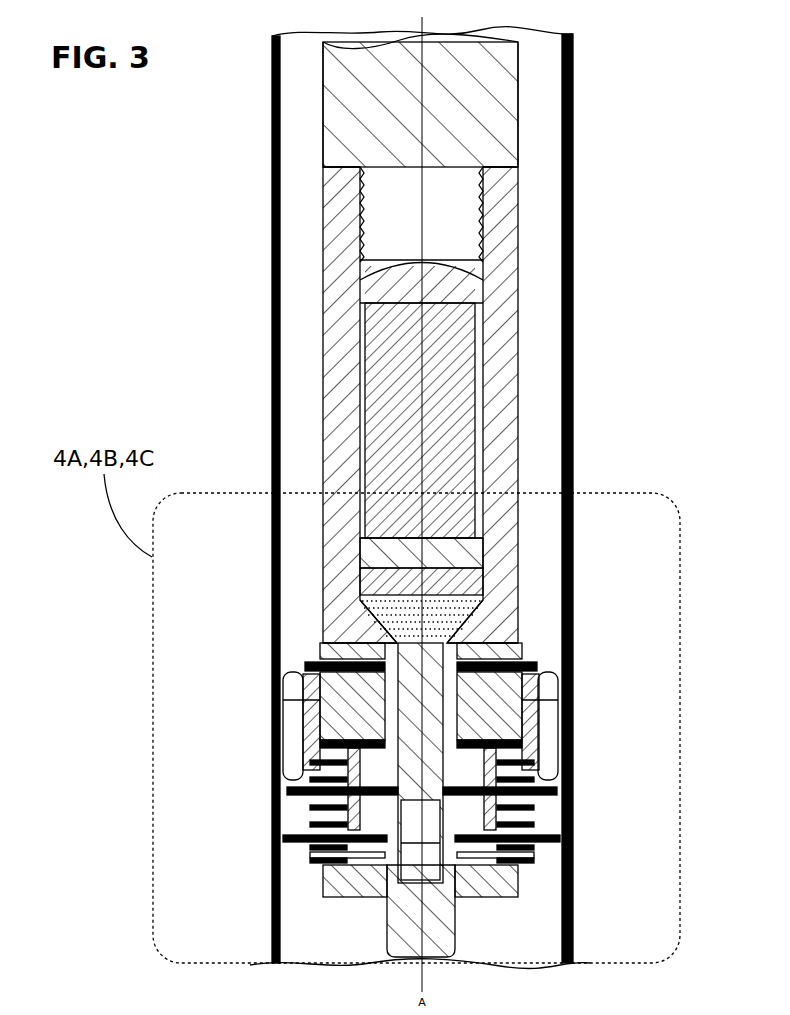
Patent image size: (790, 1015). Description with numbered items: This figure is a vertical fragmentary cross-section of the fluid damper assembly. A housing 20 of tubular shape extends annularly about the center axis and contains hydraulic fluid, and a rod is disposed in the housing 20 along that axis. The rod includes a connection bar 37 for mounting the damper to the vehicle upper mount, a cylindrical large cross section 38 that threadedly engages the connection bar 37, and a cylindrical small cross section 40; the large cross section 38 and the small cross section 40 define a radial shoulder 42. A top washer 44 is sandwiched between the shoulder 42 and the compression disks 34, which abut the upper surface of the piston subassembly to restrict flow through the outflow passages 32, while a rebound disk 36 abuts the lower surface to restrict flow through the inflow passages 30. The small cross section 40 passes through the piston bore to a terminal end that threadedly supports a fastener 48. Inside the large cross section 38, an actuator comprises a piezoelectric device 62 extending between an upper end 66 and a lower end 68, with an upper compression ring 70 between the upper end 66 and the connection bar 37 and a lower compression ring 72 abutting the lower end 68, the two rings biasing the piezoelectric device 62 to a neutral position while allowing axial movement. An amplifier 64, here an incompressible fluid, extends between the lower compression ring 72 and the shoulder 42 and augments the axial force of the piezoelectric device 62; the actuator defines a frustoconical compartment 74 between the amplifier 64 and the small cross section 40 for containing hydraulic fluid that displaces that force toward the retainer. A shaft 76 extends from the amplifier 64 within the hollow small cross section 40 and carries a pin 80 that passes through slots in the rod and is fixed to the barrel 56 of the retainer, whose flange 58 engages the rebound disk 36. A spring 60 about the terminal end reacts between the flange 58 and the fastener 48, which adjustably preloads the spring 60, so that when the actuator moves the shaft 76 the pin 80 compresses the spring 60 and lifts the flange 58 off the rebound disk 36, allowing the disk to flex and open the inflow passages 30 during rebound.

The housing 20 is at (573, 108).
The connection bar 37 is at (360, 123).
The large cross section 38 is at (333, 397).
The upper compression ring 70 is at (450, 285).
The upper end 66 is at (462, 308).
The piezoelectric device 62 is at (467, 412).
The lower end 68 is at (463, 532).
The lower compression ring 72 is at (360, 553).
The compartment 74 is at (465, 600).
The amplifier 64 is at (365, 588).
The shoulder 42 is at (500, 614).
The top washer 44 is at (325, 646).
The compression disks 34 is at (545, 664).
The inflow passages 30 is at (315, 745).
The small cross section 40 is at (285, 706).
The rebound disk 36 is at (545, 745).
The outflow passages 32 is at (300, 733).
The shaft 76 is at (440, 705).
The barrel 56 is at (305, 785).
The flange 58 is at (528, 783).
The spring 60 is at (505, 824).
The pin 80 is at (318, 838).
The fastener 48 is at (518, 872).